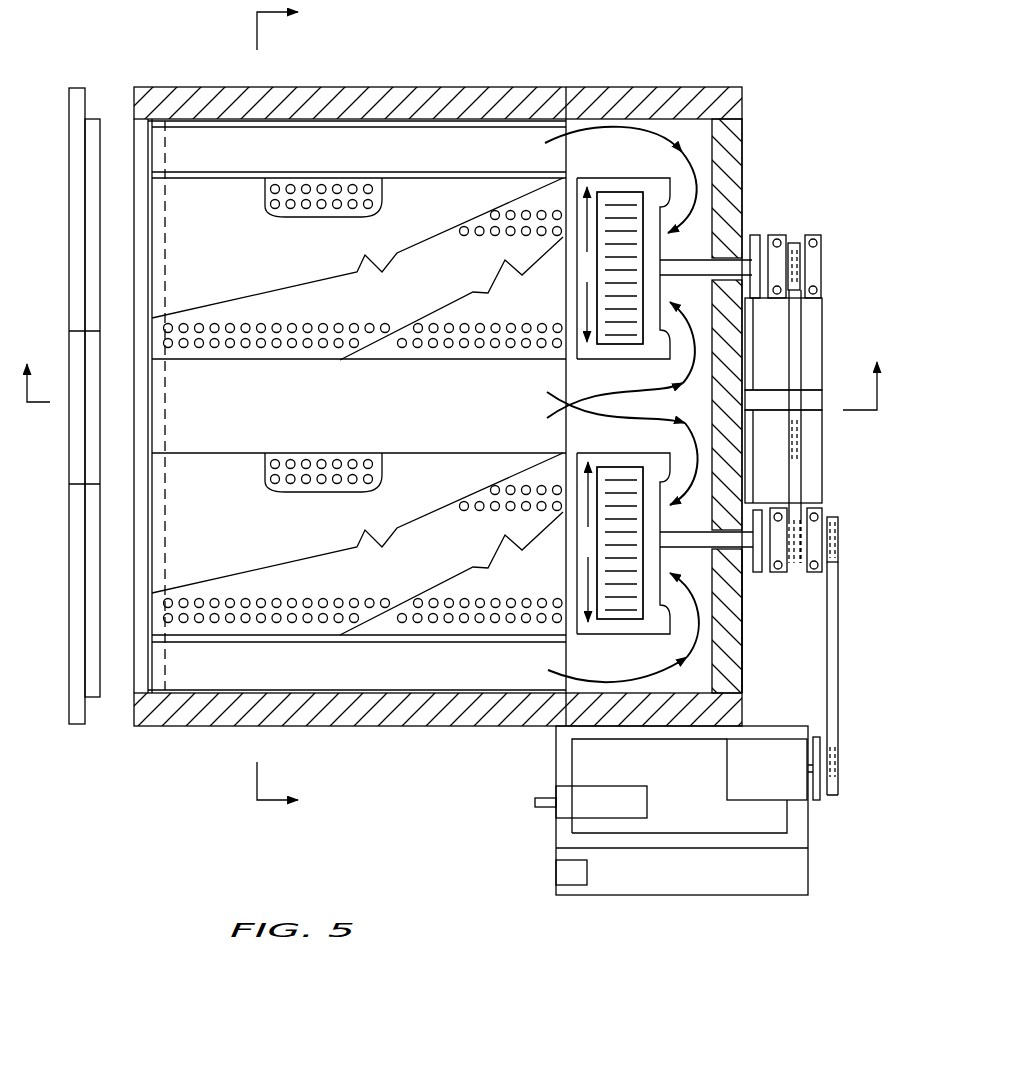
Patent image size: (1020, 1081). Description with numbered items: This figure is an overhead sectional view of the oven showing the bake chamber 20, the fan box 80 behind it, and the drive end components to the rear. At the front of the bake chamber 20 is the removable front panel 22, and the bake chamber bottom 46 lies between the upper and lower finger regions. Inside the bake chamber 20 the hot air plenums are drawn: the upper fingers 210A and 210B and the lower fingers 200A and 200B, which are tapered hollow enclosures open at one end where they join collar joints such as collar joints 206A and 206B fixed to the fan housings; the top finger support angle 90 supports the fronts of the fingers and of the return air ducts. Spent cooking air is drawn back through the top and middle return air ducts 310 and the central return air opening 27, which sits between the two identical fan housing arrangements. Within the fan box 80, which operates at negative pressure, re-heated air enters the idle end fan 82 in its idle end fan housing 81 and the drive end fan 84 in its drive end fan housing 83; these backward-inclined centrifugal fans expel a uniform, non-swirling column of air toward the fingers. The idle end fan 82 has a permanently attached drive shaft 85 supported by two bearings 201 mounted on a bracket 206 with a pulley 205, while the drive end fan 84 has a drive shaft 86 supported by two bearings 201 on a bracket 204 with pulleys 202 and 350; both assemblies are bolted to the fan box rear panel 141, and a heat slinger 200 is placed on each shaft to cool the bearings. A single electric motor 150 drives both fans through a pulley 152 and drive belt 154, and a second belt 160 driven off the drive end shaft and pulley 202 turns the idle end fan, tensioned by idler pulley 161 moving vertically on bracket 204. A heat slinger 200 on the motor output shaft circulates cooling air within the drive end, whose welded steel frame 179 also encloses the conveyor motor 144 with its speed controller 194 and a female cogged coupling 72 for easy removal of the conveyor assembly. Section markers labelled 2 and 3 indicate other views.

The section line 2- 2 is at (452, 371).
The section line 3- 3 is at (286, 406).
The bake chamber 20 is at (438, 84).
The front panel 22 is at (77, 724).
The central return air opening 27 is at (566, 432).
The bake chamber bottom 46 is at (367, 418).
The female cogged coupling 72 is at (535, 803).
The fan box 80 is at (655, 84).
The idle end fan housing 81 is at (587, 264).
The idle end fan 82 is at (612, 192).
The drive end fan housing 83 is at (588, 542).
The drive end fan 84 is at (620, 619).
The drive shaft 85 is at (672, 258).
The drive shaft 86 is at (672, 530).
The top finger support angle 90 is at (165, 410).
The fan box rear panel 141 is at (742, 650).
The conveyor motor 144 is at (600, 786).
The electric motor 150 is at (727, 768).
The pulley 152 is at (840, 770).
The drive belt 154 is at (840, 710).
The belt 160 is at (822, 398).
The idler pulley 161 is at (800, 440).
The welded steel frame 179 is at (798, 838).
The conveyor speed controller 194 is at (556, 872).
The heat slinger 200 is at (755, 235).
The lower finger 200A is at (506, 309).
The lower finger 200B is at (506, 584).
The bearing 201 is at (777, 235).
The pulley 202 is at (797, 572).
The bracket 204 is at (822, 428).
The pulley 205 is at (793, 243).
The bracket 206 is at (822, 318).
The collar joint 206A is at (356, 304).
The collar joint 206B is at (358, 579).
The upper finger 210A is at (208, 239).
The upper finger 210B is at (209, 514).
The top and middle return air duct 310 is at (359, 159).
The pulley 350 is at (832, 517).